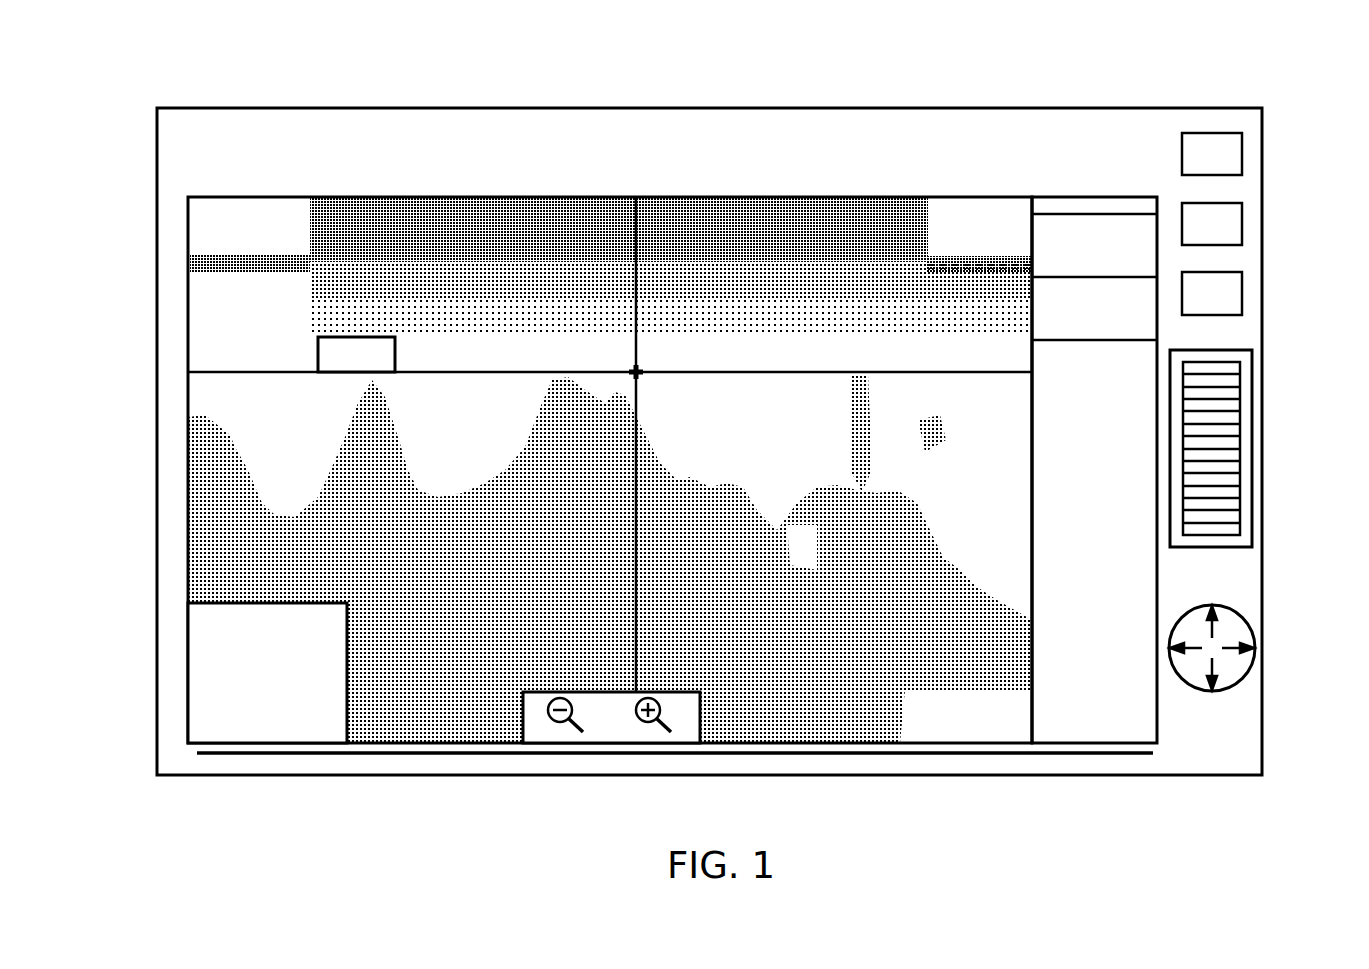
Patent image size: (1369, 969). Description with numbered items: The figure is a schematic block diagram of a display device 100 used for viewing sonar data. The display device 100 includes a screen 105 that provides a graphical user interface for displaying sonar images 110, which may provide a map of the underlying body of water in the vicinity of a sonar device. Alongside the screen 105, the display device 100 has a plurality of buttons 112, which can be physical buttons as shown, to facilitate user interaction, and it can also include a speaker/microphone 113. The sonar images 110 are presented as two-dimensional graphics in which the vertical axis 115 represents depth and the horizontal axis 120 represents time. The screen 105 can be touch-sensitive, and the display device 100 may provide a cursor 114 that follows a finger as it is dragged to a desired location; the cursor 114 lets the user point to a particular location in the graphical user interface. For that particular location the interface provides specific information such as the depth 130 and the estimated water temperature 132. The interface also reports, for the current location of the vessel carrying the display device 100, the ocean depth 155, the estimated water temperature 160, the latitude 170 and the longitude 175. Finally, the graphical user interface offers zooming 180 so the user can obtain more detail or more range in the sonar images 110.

The display device 100 is at (157, 237).
The screen 105 is at (350, 197).
The sonar images 110 is at (460, 235).
The plurality of buttons 112 is at (1230, 152).
The speaker/microphone 113 is at (1222, 441).
The cursor 114 is at (635, 372).
The vertical axis 115 is at (1032, 323).
The horizontal axis 120 is at (980, 756).
The depth 130 is at (318, 358).
The estimated water temperature 132 is at (213, 308).
The ocean depth 155 is at (198, 623).
The estimated water temperature 160 is at (198, 650).
The latitude 170 is at (198, 676).
The longitude 175 is at (198, 703).
The zooming 180 is at (637, 721).